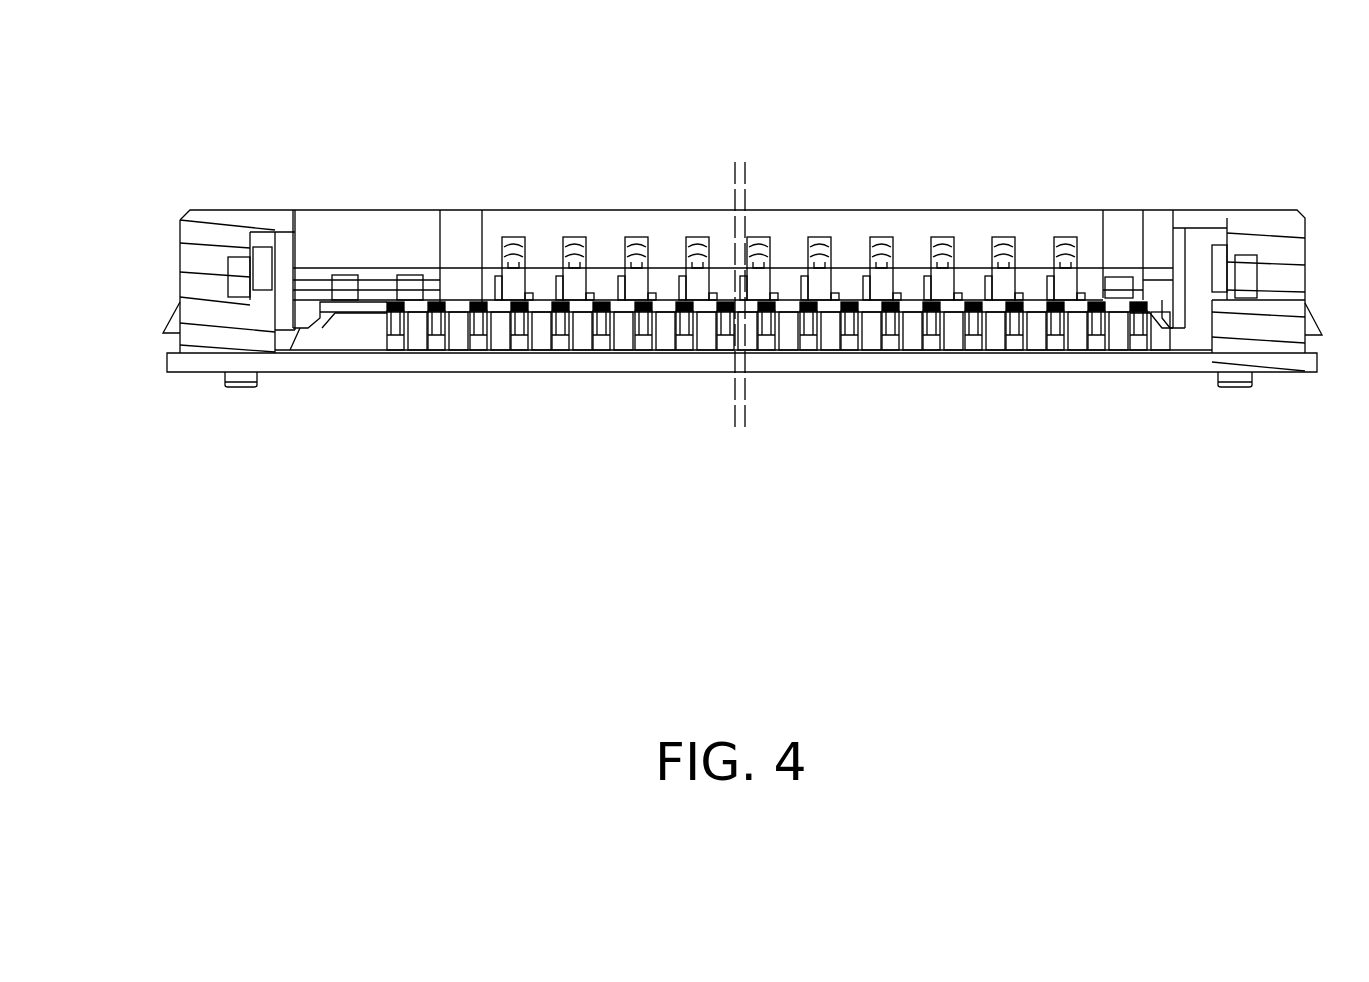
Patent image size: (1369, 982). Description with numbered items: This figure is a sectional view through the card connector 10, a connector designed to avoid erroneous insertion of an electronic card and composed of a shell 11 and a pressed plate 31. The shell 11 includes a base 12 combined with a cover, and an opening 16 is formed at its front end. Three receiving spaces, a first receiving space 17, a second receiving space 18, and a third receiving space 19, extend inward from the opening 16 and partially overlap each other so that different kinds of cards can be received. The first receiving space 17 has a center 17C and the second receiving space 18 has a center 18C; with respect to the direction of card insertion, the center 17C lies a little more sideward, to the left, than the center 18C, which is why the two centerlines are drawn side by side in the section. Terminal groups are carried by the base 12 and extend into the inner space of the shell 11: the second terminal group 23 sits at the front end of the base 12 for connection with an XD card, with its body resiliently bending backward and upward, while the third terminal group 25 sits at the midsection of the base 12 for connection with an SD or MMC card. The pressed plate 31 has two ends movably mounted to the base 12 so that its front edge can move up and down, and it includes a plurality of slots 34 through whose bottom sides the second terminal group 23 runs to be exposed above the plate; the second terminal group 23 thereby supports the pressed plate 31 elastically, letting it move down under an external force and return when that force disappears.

The card connector 10 is at (377, 537).
The shell 11 is at (191, 372).
The base 12 is at (205, 373).
The opening 16 is at (667, 255).
The first receiving space 17 is at (1135, 223).
The center of first receiving space 17C is at (735, 182).
The second receiving space 18 is at (1132, 267).
The center of second receiving space 18C is at (745, 182).
The third receiving space 19 is at (1132, 233).
The second terminal group 23 is at (838, 330).
The third terminal group 25 is at (822, 233).
The pressed plate 31 is at (355, 312).
The slots 34 is at (385, 342).